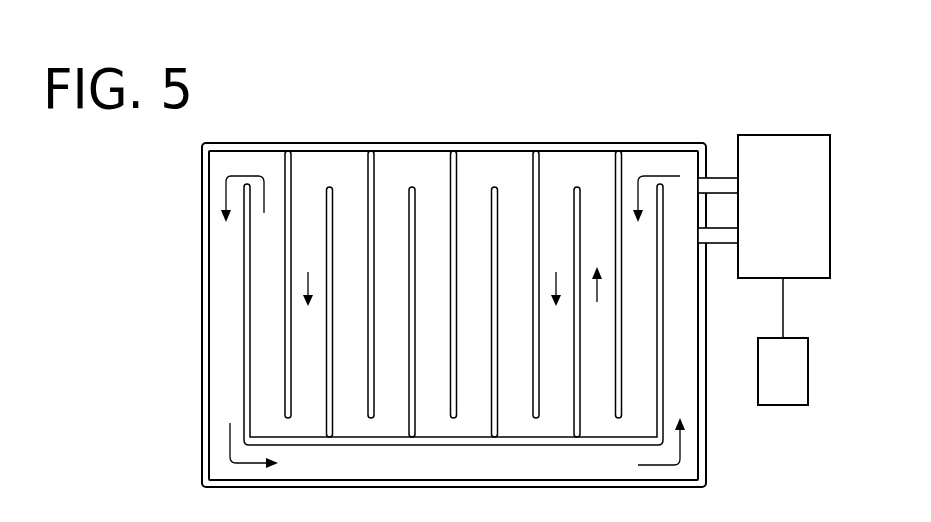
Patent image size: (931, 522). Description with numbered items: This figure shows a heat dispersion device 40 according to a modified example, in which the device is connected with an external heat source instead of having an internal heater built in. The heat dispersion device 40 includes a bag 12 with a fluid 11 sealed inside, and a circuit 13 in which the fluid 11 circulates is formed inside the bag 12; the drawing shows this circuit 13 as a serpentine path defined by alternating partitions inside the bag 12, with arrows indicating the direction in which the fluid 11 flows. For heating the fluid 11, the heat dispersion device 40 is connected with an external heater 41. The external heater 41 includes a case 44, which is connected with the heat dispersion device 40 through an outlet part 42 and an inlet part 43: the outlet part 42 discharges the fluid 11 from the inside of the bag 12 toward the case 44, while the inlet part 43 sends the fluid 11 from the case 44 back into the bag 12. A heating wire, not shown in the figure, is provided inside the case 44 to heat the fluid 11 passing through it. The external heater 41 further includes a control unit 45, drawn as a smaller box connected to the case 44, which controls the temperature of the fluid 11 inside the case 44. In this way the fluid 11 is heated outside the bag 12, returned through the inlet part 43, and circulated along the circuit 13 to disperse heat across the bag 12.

The fluid 11 is at (348, 160).
The bag 12 is at (512, 142).
The circuit 13 is at (432, 158).
The heat dispersion device 40 is at (666, 83).
The external heater 41 is at (823, 135).
The outlet part 42 is at (715, 176).
The inlet part 43 is at (722, 246).
The case 44 is at (832, 207).
The control unit 45 is at (810, 373).